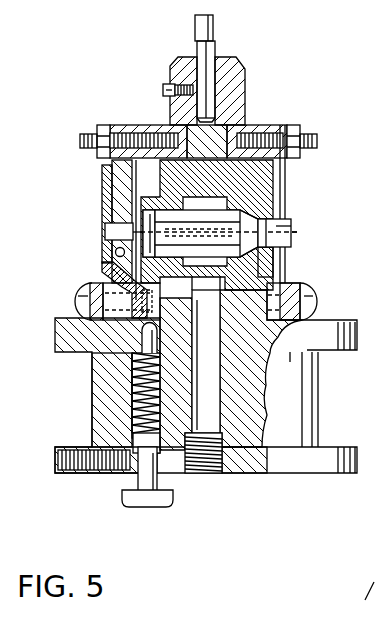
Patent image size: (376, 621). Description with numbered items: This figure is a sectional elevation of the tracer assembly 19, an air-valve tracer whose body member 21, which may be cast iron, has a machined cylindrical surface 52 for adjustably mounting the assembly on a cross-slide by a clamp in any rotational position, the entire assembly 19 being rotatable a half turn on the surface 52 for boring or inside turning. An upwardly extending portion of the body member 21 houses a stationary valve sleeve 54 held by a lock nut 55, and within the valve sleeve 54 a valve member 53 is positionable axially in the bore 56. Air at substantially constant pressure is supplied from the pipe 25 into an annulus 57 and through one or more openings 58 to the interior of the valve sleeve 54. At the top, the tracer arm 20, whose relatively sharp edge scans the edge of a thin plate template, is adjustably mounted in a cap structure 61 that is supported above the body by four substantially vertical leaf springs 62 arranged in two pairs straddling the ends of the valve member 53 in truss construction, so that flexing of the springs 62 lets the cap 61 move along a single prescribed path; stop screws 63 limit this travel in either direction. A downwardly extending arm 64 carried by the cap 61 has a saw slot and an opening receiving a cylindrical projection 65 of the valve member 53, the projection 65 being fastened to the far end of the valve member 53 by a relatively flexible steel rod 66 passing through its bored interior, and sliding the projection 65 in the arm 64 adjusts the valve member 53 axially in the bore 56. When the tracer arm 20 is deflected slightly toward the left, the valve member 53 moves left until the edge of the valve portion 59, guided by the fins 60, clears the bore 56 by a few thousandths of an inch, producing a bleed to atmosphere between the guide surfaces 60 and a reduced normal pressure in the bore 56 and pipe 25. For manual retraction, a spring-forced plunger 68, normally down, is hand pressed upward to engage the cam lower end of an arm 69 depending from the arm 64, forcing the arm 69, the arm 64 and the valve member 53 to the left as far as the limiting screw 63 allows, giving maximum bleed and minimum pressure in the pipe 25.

The tracer arm 20 is at (214, 26).
The cap structure 61 is at (246, 89).
The downwardly extending arm 64 is at (127, 125).
The stop screws 63 is at (80, 139).
The leaf springs 62 is at (284, 196).
The lock nut 55 is at (270, 184).
The bore 56 is at (268, 252).
The valve portion 59 is at (150, 217).
The valve member 53 is at (279, 224).
The flexible steel rod 66 is at (288, 233).
The fins 60 is at (142, 198).
The tracer assembly 19 is at (84, 212).
The cylindrical projection 65 is at (105, 233).
The arm 69 is at (105, 272).
The body member 21 is at (55, 337).
The machined cylindrical surface 52 is at (92, 387).
The valve sleeve 54 is at (176, 363).
The annulus 57 is at (213, 310).
The openings 58 is at (206, 361).
The pipe 25 is at (204, 471).
The plunger 68 is at (127, 505).